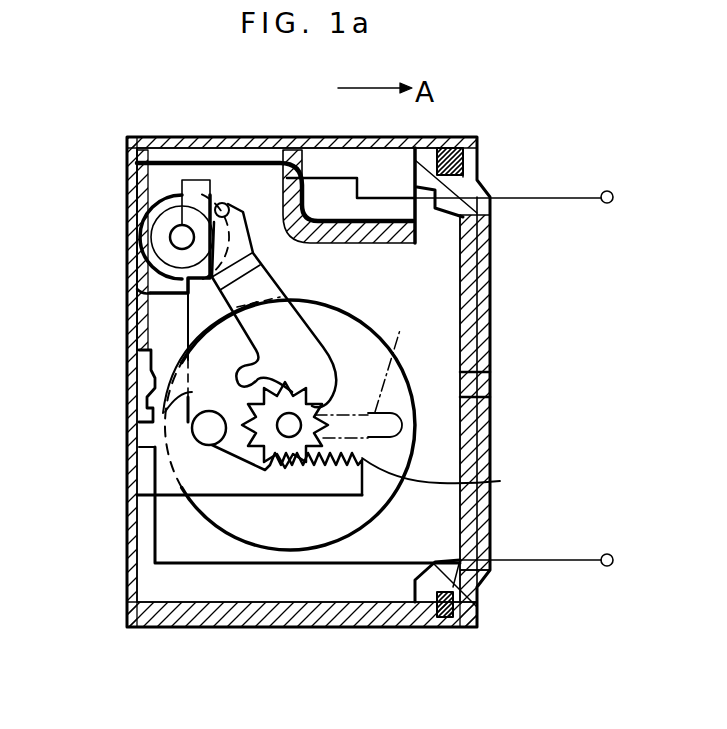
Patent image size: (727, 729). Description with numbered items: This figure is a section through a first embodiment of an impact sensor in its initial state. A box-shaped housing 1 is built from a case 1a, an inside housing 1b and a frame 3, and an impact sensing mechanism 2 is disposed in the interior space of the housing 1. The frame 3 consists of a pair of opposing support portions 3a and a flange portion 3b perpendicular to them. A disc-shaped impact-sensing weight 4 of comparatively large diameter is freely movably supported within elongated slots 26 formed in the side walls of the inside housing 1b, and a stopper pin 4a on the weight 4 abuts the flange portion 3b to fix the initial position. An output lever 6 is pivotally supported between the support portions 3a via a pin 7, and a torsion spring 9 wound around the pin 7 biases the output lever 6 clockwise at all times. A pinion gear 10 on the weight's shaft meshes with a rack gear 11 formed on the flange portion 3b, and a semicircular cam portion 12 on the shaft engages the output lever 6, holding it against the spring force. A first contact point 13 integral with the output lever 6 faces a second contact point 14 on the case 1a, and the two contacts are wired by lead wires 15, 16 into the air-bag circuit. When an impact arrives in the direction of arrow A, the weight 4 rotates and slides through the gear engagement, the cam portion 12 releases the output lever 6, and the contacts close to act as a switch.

The housing 1 is at (158, 137).
The case 1a is at (303, 137).
The inside housing 1b is at (218, 137).
The impact sensing mechanism 2 is at (364, 537).
The frame 3 is at (155, 192).
The support portion 3a is at (137, 292).
The flange portion 3b is at (284, 485).
The impact-sensing weight 4 is at (253, 530).
The stopper pin 4a is at (190, 430).
The output lever 6 is at (254, 290).
The pin 7 is at (172, 236).
The torsion spring 9 is at (143, 257).
The pinion gear 10 is at (305, 378).
The rack gear 11 is at (451, 477).
The cam portion 12 is at (403, 437).
The first contact point 13 is at (200, 335).
The second contact point 14 is at (139, 380).
The lead wire 15 is at (558, 197).
The lead wire 16 is at (567, 560).
The elongated slot 26 is at (395, 350).